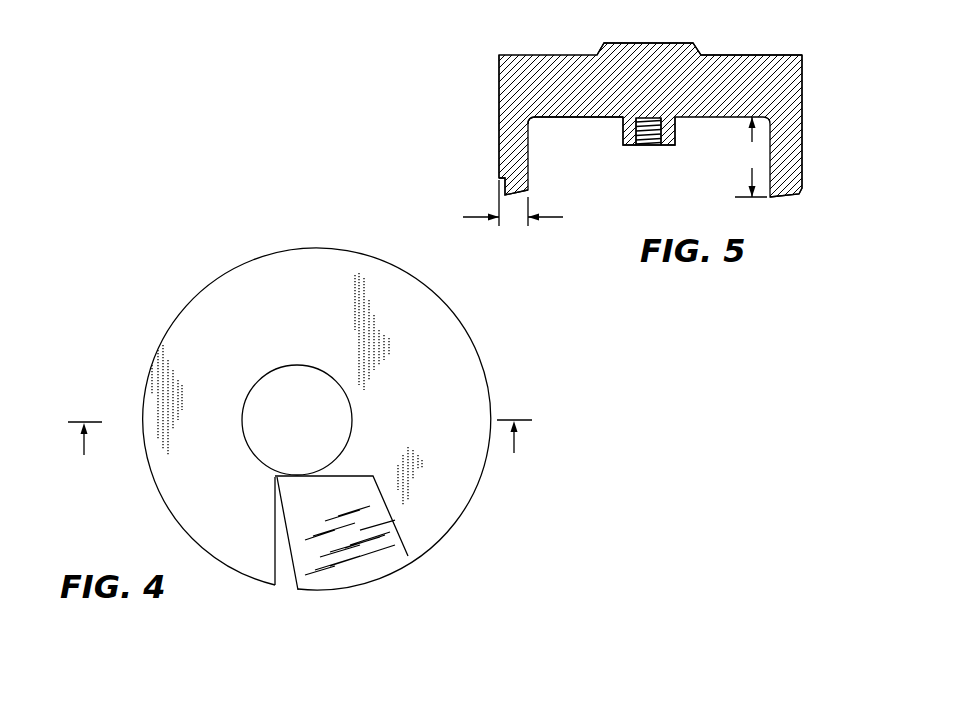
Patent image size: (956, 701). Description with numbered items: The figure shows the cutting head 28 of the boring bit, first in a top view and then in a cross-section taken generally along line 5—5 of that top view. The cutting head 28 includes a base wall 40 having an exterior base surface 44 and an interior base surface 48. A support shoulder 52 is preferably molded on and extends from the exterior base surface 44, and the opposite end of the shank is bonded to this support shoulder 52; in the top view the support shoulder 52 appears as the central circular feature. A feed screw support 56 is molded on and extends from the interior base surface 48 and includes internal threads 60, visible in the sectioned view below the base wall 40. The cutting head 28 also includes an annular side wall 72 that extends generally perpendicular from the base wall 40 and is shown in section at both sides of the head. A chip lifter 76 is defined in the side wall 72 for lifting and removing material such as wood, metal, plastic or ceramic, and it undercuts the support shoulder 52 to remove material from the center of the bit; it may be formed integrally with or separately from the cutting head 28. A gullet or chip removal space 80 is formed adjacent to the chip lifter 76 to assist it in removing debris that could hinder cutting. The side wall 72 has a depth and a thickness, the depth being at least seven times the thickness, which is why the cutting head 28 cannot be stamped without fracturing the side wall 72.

In FIG. 4, the cutting head 28 is at (325, 399).
In FIG. 4, the base wall 40 is at (458, 355).
In FIG. 5, the base wall 40 is at (788, 80).
In FIG. 4, the exterior base surface 44 is at (250, 350).
In FIG. 5, the exterior base surface 44 is at (770, 55).
In FIG. 5, the interior base surface 48 is at (556, 120).
In FIG. 4, the support shoulder 52 is at (351, 439).
In FIG. 5, the support shoulder 52 is at (672, 43).
In FIG. 5, the feed screw support 56 is at (644, 167).
In FIG. 5, the internal threads 60 is at (633, 147).
In FIG. 5, the annular side wall 72 is at (499, 73).
In FIG. 4, the chip lifter 76 is at (322, 582).
In FIG. 4, the gullet or chip removal space 80 is at (271, 597).
In FIG. 4, the section line 5- 5 is at (300, 453).